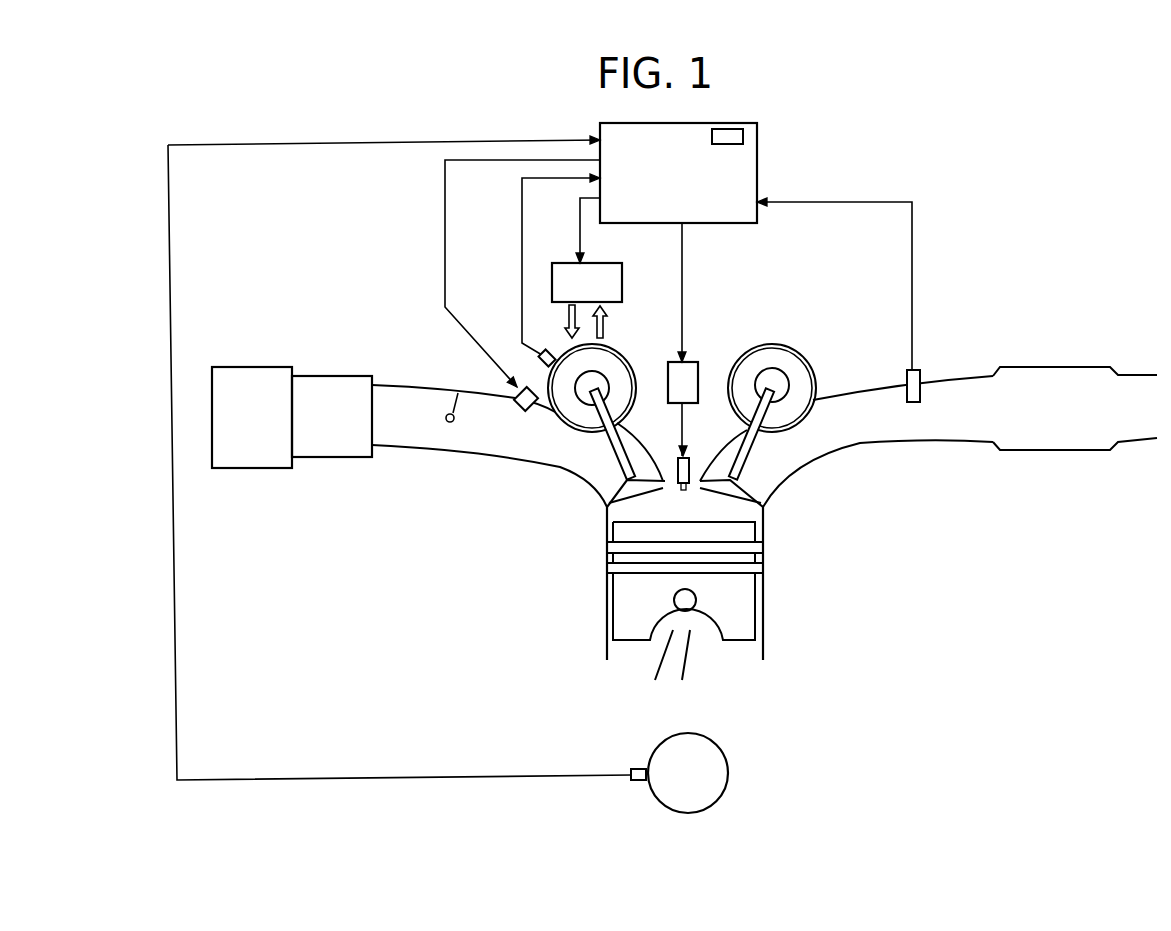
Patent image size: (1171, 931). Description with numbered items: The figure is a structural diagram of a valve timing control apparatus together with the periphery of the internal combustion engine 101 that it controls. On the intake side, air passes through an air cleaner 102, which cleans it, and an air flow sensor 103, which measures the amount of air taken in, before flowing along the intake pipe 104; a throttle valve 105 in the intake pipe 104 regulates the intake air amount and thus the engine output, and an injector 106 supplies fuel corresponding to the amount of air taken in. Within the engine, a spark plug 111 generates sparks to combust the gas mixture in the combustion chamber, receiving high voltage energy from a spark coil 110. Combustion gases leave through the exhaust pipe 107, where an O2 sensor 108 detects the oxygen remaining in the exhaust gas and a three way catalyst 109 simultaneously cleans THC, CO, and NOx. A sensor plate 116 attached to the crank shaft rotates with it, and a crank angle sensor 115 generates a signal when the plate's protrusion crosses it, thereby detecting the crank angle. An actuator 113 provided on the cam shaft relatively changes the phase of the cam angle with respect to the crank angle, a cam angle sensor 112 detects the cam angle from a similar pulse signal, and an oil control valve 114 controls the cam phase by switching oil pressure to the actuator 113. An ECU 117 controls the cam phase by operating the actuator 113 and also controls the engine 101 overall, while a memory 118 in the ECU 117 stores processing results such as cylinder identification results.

The internal combustion engine 101 is at (763, 593).
The air cleaner 102 is at (250, 367).
The air flow sensor 103 is at (330, 376).
The intake pipe 104 is at (405, 445).
The throttle valve 105 is at (450, 422).
The injector 106 is at (518, 377).
The exhaust pipe 107 is at (888, 450).
The O2 sensor 108 is at (918, 372).
The three way catalyst 109 is at (1065, 452).
The spark coil 110 is at (697, 357).
The spark plug 111 is at (692, 470).
The cam angle sensor 112 is at (547, 350).
The actuator (valve timing changing means) 113 is at (630, 357).
The oil control valve (OCV) 114 is at (597, 263).
The crank angle sensor 115 is at (637, 769).
The sensor plate 116 is at (713, 740).
The ECU 117 is at (757, 133).
The memory 118 is at (728, 129).